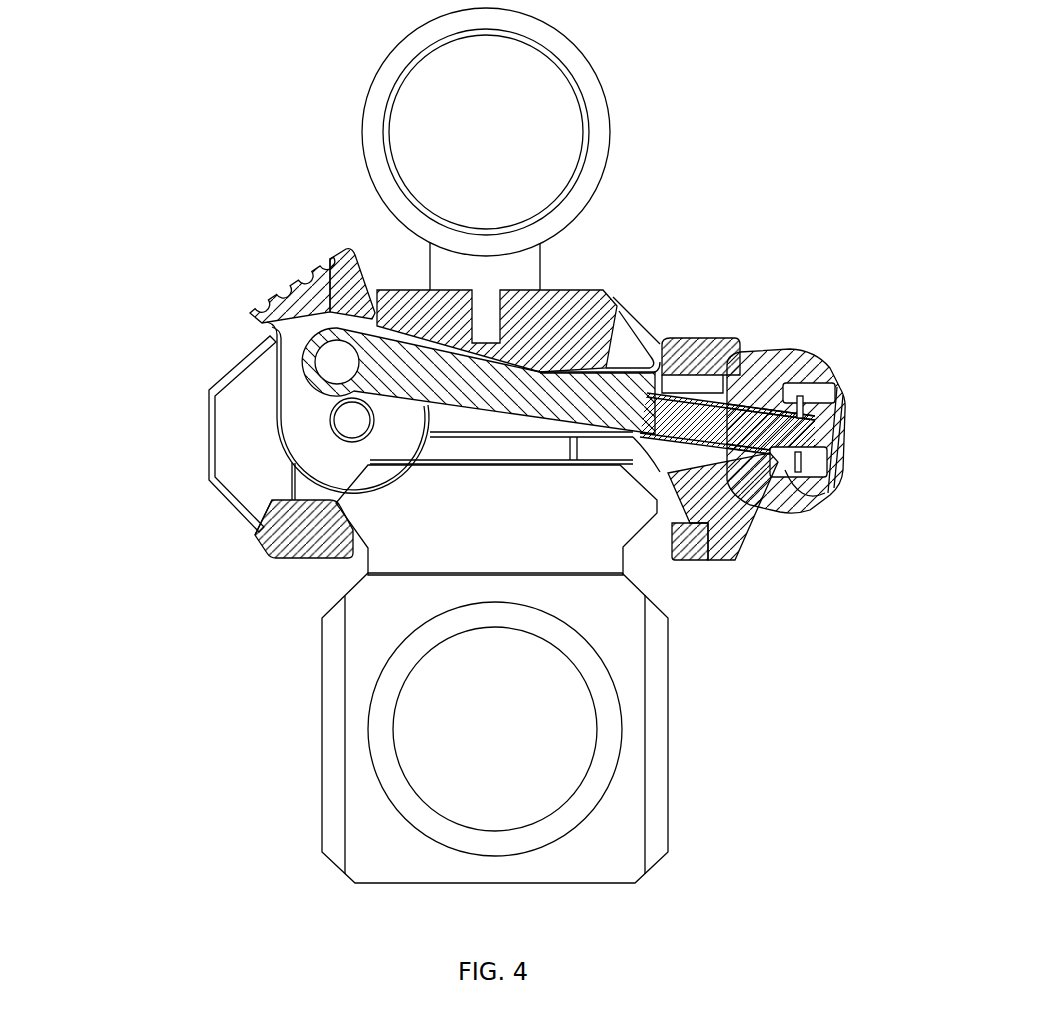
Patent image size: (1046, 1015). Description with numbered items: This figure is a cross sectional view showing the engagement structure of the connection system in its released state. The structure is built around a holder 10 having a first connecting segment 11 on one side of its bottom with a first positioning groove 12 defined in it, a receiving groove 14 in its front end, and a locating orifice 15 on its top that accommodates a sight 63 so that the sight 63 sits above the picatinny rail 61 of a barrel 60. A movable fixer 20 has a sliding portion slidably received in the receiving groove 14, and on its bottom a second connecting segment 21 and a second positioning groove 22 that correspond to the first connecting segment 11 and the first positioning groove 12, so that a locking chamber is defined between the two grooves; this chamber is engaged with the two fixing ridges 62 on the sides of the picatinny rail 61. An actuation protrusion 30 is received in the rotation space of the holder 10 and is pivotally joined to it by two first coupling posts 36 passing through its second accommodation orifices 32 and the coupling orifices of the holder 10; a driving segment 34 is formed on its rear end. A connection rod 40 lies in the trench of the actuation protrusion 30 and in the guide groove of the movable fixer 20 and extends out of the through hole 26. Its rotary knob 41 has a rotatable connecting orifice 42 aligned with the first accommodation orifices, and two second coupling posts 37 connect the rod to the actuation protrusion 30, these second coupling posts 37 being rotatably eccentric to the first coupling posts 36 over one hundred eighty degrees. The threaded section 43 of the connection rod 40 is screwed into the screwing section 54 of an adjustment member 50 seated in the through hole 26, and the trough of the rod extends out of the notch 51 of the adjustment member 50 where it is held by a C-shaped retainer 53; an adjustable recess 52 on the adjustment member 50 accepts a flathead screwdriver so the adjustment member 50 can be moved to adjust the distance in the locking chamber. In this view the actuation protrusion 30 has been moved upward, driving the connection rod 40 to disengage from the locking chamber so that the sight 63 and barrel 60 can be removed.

The holder 10 is at (280, 543).
The first connecting segment 11 is at (290, 498).
The first positioning groove 12 is at (267, 522).
The receiving groove 14 is at (552, 450).
The locating orifice 15 is at (488, 312).
The movable fixer 20 is at (682, 340).
The second connecting segment 21 is at (680, 537).
The second positioning groove 22 is at (715, 500).
The through hole 26 is at (712, 478).
The actuation protrusion 30 is at (348, 420).
The second accommodation orifices 32 is at (224, 419).
The driving segment 34 is at (285, 270).
The first coupling posts 36 is at (300, 468).
The second coupling posts 37 is at (333, 362).
The connection rod 40 is at (339, 552).
The rotary knob 41 is at (330, 306).
The rotatable connecting orifice 42 is at (365, 381).
The threaded section 43 is at (737, 340).
The adjustment member 50 is at (815, 414).
The notch 51 is at (793, 398).
The adjustable recess 52 is at (825, 377).
The C-shaped retainer 53 is at (800, 463).
The screwing section 54 is at (783, 493).
The barrel 60 is at (561, 666).
The picatinny rail 61 is at (438, 502).
The fixing ridges 62 is at (345, 515).
The sight 63 is at (540, 105).